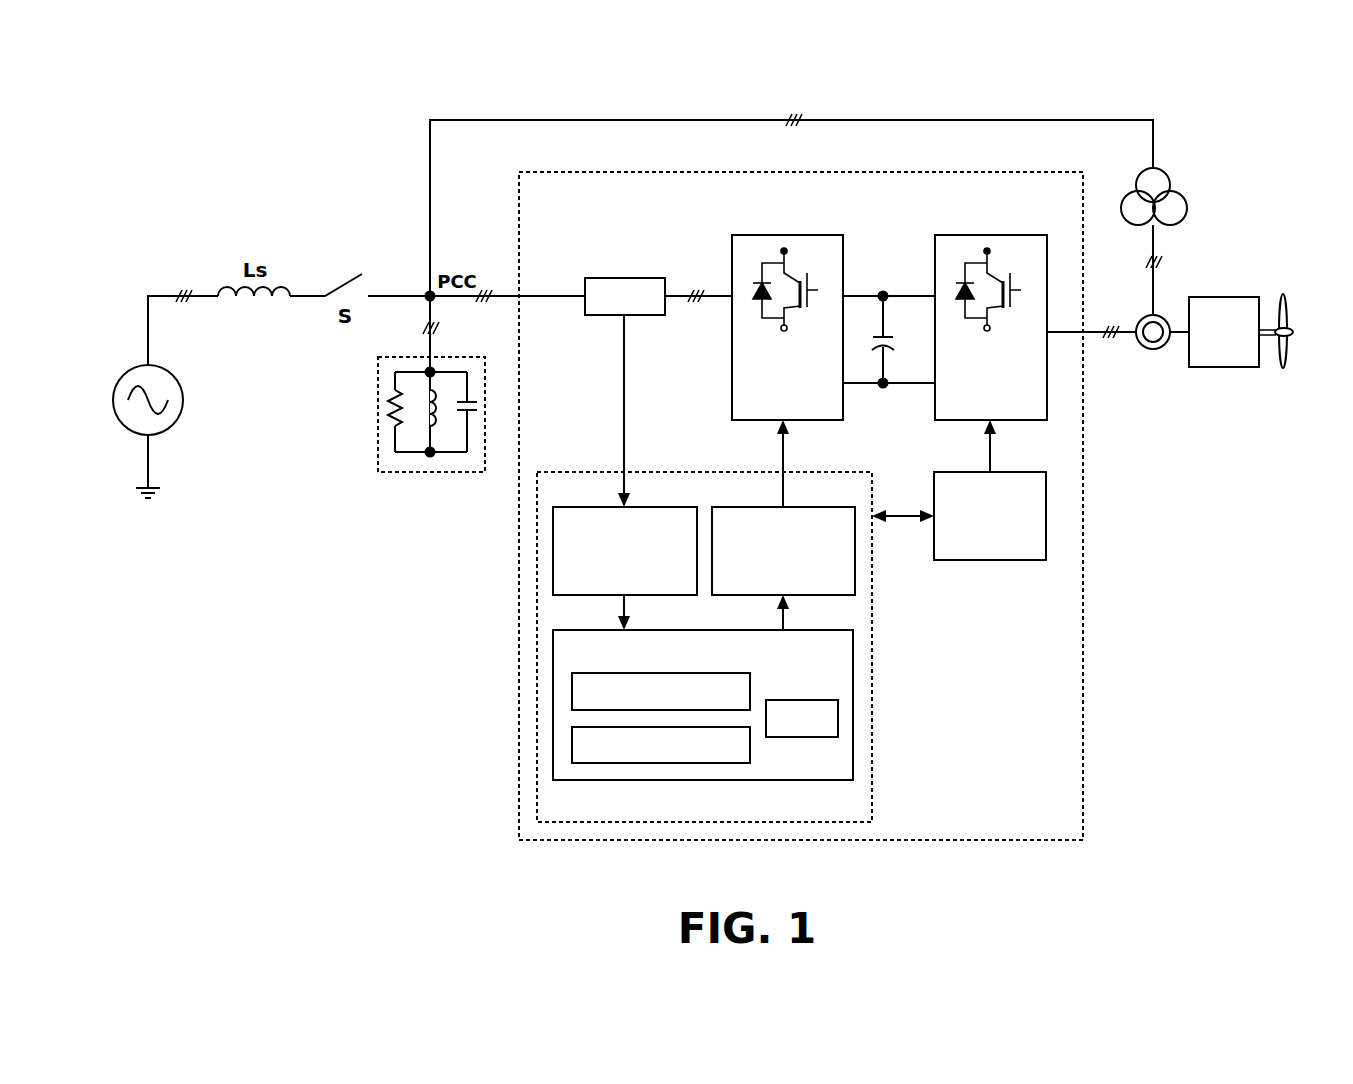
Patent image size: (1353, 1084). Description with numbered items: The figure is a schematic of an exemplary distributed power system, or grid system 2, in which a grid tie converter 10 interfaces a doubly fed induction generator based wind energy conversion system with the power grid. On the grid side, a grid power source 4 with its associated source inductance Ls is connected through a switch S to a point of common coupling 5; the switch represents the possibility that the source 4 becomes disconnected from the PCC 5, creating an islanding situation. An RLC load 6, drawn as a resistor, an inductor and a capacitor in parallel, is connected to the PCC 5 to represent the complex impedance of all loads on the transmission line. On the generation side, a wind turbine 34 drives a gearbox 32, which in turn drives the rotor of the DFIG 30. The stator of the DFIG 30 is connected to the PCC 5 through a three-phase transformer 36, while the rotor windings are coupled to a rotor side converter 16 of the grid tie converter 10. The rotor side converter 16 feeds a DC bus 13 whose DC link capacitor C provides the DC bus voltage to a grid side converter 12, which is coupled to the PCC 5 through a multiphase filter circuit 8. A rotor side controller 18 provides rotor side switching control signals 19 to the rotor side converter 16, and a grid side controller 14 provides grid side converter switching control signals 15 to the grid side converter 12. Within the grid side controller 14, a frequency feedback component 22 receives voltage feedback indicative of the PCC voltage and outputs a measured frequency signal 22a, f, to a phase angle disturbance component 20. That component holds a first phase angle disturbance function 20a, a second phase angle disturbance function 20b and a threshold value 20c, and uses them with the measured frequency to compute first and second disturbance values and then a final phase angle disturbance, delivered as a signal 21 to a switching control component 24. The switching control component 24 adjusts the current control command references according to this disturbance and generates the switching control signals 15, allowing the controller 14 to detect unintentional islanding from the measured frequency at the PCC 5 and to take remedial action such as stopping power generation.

The grid system 2 is at (212, 148).
The grid power source 4 is at (113, 400).
The point of common coupling 5 is at (428, 289).
The RLC load 6 is at (378, 378).
The filter circuit 8 is at (622, 278).
The grid tie converter 10 is at (801, 172).
The grid side converter 12 is at (732, 272).
The DC bus 13 is at (876, 410).
The grid side controller 14 is at (874, 801).
The grid side converter switching control signals 15 is at (783, 445).
The rotor side converter 16 is at (935, 272).
The rotor side controller 18 is at (935, 472).
The rotor side switching control signals 19 is at (990, 441).
The phase angle disturbance component 20 is at (553, 648).
The first phase angle disturbance function 20a is at (572, 692).
The second phase angle disturbance function 20b is at (572, 746).
The threshold value 20c is at (838, 718).
The final phase angle disturbance signal 21 is at (783, 617).
The frequency feedback component 22 is at (590, 507).
The measured frequency signal 22a is at (624, 612).
The switching control component 24 is at (757, 507).
The doubly fed induction generator 30 is at (1143, 320).
The gearbox 32 is at (1223, 297).
The wind turbine 34 is at (1288, 309).
The three-phase transformer 36 is at (1198, 191).